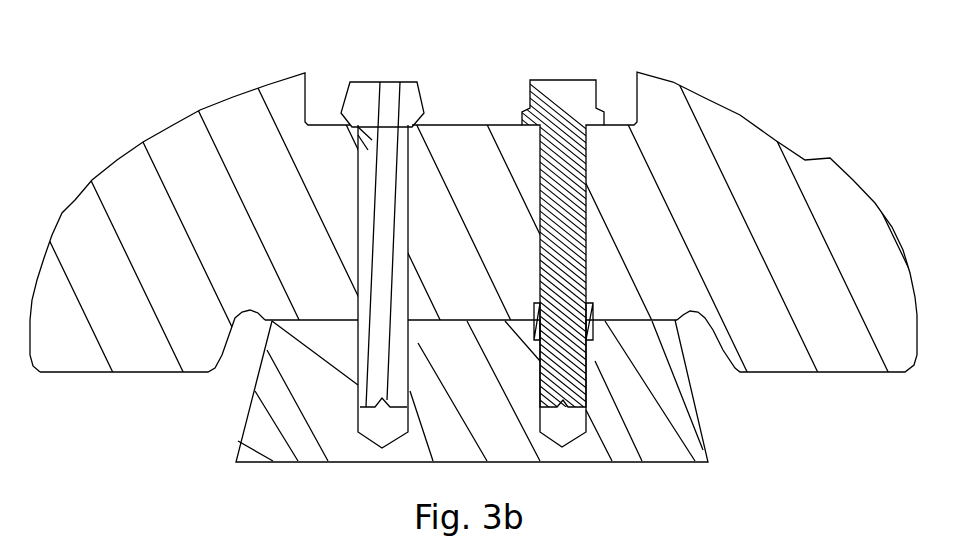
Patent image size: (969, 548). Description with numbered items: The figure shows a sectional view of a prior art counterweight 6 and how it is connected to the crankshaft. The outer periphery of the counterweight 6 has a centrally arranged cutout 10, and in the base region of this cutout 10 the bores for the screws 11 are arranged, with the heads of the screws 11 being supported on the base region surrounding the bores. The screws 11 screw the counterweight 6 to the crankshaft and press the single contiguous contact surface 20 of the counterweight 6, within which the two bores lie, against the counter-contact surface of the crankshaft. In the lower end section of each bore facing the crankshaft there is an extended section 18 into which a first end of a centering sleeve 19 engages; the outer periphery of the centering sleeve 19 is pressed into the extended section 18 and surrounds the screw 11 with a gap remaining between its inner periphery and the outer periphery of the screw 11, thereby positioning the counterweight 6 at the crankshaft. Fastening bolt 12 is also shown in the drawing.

The cutout 10 is at (480, 79).
The counterweight 6 is at (705, 130).
The screw 11 is at (395, 213).
The fastening bolt 12 is at (597, 318).
The extended section 18 is at (490, 323).
The centering sleeve 19 is at (348, 305).
The contact surface 20 is at (470, 320).